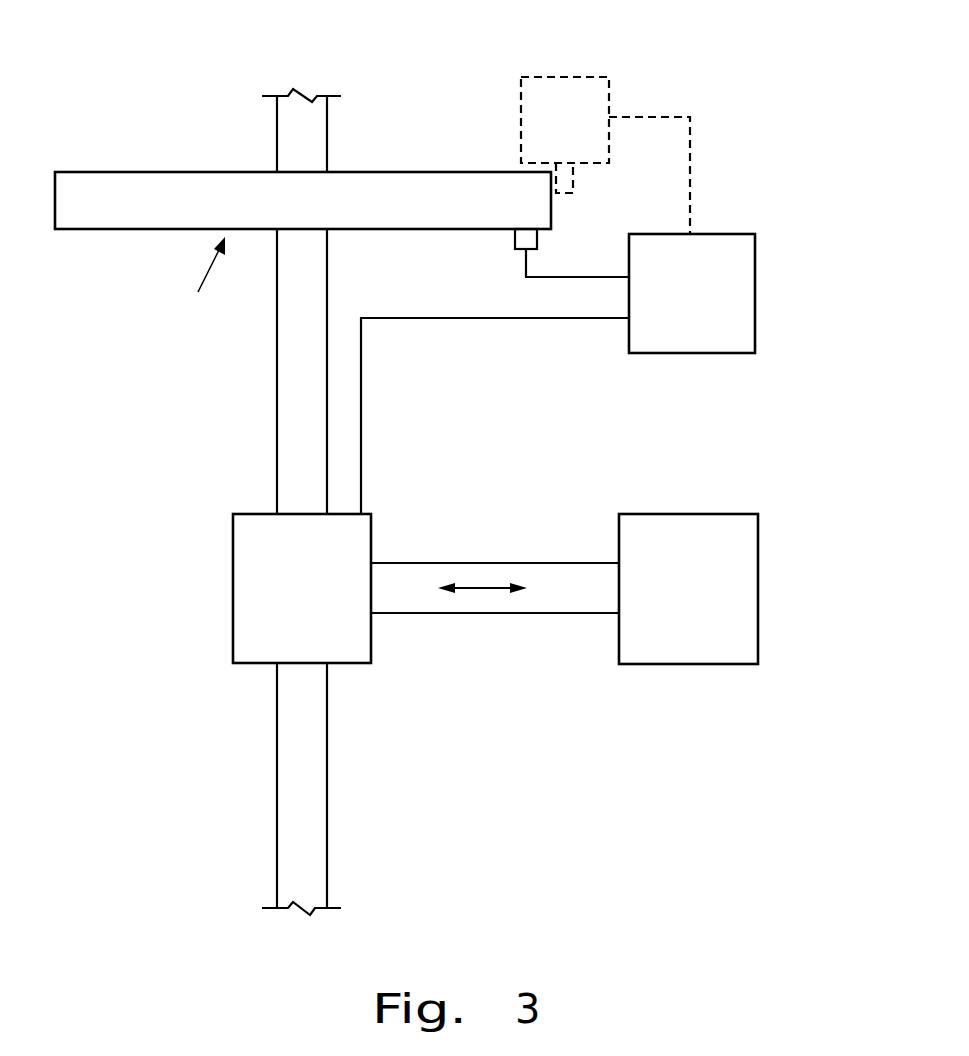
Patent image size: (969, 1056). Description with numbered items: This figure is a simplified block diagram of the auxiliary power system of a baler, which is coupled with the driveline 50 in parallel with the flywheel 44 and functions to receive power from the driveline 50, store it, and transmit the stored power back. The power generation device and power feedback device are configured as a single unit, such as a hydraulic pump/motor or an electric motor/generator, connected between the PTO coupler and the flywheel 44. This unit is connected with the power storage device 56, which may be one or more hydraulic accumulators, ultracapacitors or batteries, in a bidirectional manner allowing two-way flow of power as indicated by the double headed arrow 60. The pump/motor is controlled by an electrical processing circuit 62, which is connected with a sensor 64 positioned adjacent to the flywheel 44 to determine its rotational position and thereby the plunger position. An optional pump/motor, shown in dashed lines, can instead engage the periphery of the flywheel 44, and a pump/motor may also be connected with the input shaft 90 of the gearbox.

The flywheel 44 is at (121, 231).
The driveline 50 is at (258, 122).
The input shaft 90 is at (327, 127).
The power storage device 56 is at (758, 573).
The double headed arrow 60 is at (484, 590).
The electrical processing circuit 62 is at (755, 294).
The sensor 64 is at (515, 248).